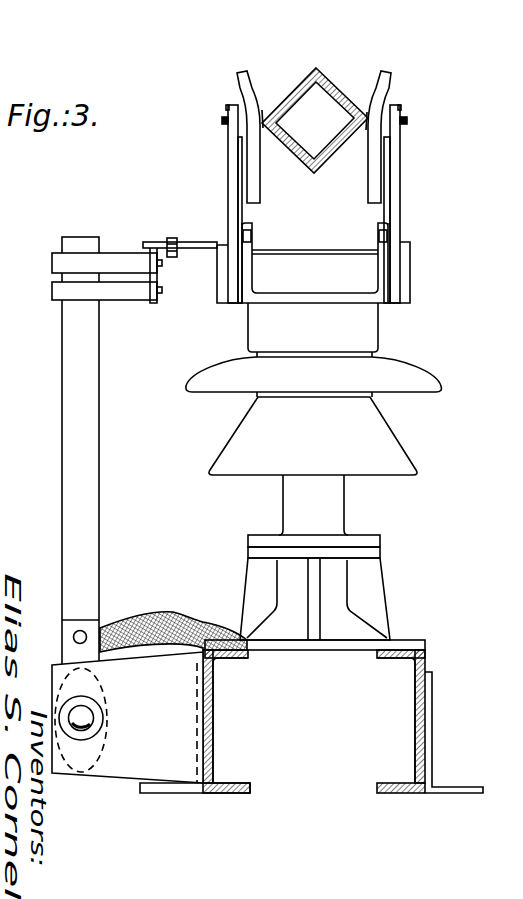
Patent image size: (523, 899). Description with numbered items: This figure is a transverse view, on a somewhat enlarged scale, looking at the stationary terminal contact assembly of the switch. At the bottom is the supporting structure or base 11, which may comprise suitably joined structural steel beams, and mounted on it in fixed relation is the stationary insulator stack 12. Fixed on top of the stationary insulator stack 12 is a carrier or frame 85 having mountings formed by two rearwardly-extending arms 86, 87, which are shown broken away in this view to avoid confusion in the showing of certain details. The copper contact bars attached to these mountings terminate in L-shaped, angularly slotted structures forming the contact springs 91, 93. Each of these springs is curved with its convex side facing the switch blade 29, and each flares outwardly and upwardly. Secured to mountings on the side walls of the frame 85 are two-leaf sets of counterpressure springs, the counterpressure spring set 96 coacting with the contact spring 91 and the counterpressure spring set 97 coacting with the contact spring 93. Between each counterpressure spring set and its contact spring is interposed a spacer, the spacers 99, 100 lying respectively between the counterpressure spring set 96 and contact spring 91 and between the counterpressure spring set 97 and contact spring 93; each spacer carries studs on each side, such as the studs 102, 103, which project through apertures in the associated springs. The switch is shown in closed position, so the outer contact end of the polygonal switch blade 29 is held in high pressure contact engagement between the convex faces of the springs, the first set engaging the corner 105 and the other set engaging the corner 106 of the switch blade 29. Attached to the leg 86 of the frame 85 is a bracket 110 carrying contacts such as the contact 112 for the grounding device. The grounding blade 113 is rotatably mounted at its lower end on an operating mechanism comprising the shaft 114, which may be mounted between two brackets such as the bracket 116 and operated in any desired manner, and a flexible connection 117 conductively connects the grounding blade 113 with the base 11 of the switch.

The supporting structure 11 is at (440, 675).
The stationary insulator stack 12 is at (420, 438).
The switch blade 29 is at (340, 79).
The carrier or frame 85 is at (293, 262).
The rearwardly-extending arm 86 is at (252, 230).
The rearwardly-extending arm 87 is at (380, 228).
The contact spring 91 is at (240, 76).
The contact spring 93 is at (393, 78).
The counterpressure spring set 96 is at (232, 194).
The counterpressure spring set 97 is at (398, 180).
The spacer 99 is at (229, 102).
The spacer 100 is at (396, 100).
The stud 102 is at (225, 121).
The stud 103 is at (407, 121).
The corner of switch blade 105 is at (265, 108).
The corner of switch blade 106 is at (366, 125).
The bracket 110 is at (197, 250).
The contact 112 is at (57, 287).
The grounding blade 113 is at (72, 432).
The shaft 114 is at (87, 723).
The bracket 116 is at (112, 770).
The flexible connection 117 is at (140, 622).